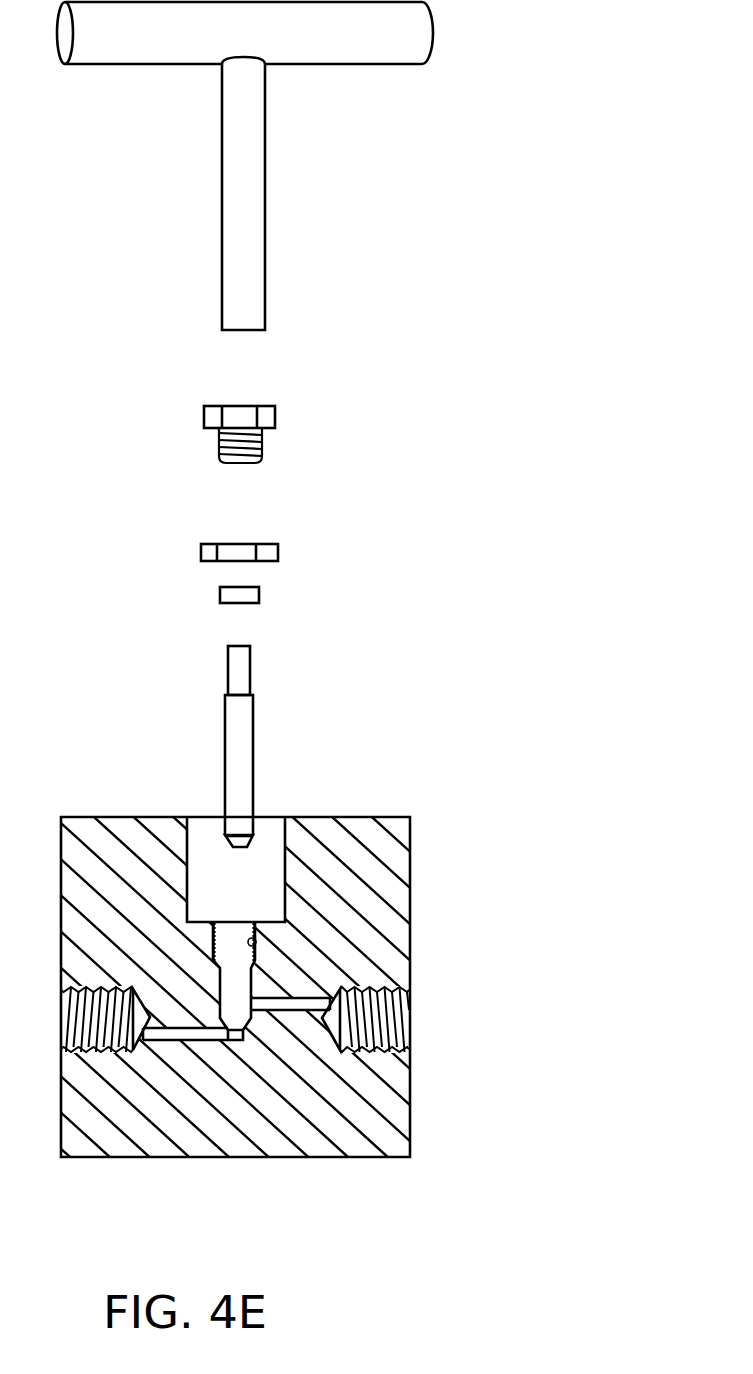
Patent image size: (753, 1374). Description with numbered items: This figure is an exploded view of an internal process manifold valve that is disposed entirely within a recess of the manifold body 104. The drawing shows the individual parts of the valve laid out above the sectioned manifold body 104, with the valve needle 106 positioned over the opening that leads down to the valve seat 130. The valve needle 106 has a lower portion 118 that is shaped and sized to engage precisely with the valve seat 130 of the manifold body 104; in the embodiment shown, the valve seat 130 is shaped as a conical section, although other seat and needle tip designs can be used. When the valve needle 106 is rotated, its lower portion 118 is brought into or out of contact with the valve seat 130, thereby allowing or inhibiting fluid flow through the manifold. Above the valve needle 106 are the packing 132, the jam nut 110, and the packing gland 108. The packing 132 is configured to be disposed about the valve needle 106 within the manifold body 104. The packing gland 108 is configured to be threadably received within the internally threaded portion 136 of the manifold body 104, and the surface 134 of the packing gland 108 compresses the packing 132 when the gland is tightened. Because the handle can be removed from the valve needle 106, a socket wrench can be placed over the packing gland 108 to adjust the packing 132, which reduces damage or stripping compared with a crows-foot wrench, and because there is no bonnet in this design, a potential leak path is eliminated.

The manifold body 104 is at (357, 833).
The valve needle 106 is at (239, 742).
The packing gland 108 is at (220, 430).
The jam nut 110 is at (200, 553).
The lower portion 118 is at (228, 838).
The valve seat 130 is at (247, 1022).
The packing 132 is at (220, 596).
The surface 134 is at (240, 462).
The internally threaded portion 136 is at (254, 946).